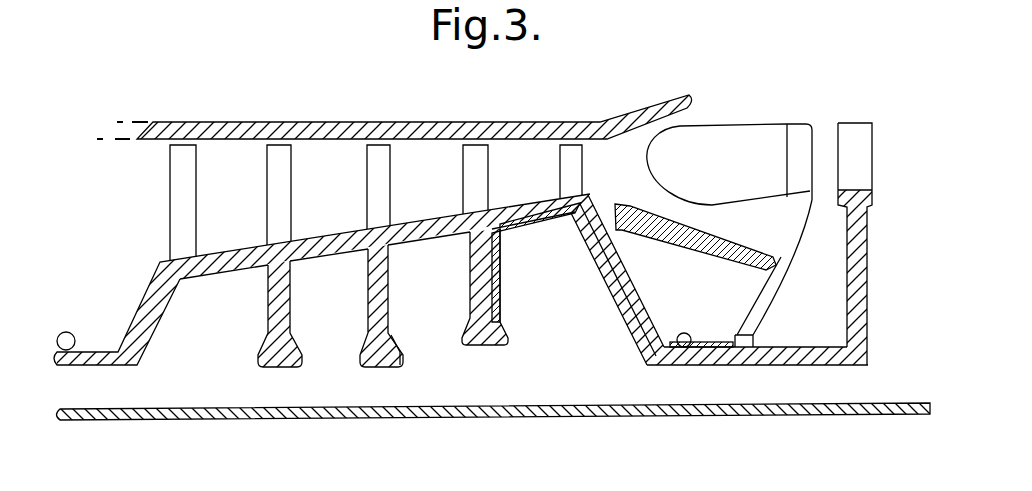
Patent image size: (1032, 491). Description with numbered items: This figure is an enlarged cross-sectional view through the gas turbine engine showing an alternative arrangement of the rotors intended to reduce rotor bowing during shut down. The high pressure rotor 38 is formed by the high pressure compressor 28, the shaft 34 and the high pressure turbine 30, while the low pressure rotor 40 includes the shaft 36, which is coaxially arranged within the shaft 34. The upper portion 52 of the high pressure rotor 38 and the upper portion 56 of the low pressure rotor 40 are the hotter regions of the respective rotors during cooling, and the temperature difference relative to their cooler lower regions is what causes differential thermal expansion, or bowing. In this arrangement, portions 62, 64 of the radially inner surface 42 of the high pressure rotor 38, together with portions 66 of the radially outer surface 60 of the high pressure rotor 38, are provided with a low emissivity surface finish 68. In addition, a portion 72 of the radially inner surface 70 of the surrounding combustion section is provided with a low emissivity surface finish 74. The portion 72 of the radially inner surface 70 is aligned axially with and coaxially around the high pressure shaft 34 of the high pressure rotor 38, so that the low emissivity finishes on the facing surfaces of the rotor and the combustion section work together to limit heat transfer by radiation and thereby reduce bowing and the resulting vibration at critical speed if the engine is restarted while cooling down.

The high-pressure compressor 28 is at (507, 200).
The high-pressure turbine 30 is at (857, 243).
The shaft 34 is at (815, 353).
The shaft 36 is at (535, 412).
The high-pressure rotor 38 is at (709, 376).
The low-pressure rotor 40 is at (584, 417).
The radially inner surface of the high pressure rotor 42 is at (416, 232).
The upper portion of the high pressure rotor 52 is at (322, 171).
The upper portion of the low pressure rotor 56 is at (149, 419).
The radially outer surface of the high pressure rotor 60 is at (685, 359).
The portion of the radially inner surface 62 is at (393, 337).
The portion of the radially inner surface 64 is at (522, 228).
The portions of the radially outer surface 66 is at (640, 291).
The low emissivity surface finish 68 is at (403, 352).
The radially inner surface of the combustion section 70 is at (733, 243).
The portion of the radially inner surface of the combustion section 72 is at (752, 264).
The low emissivity surface finish 74 is at (720, 258).